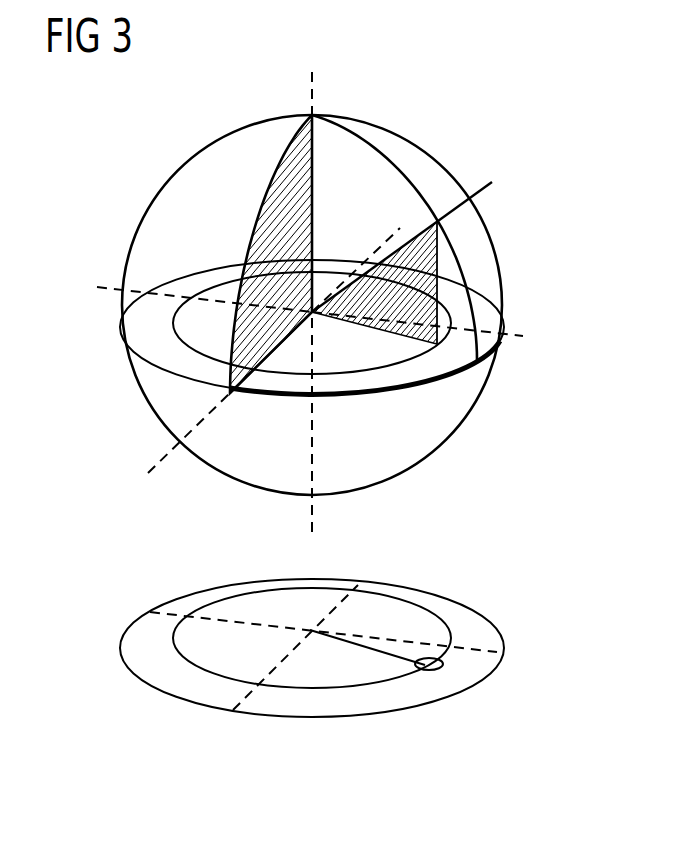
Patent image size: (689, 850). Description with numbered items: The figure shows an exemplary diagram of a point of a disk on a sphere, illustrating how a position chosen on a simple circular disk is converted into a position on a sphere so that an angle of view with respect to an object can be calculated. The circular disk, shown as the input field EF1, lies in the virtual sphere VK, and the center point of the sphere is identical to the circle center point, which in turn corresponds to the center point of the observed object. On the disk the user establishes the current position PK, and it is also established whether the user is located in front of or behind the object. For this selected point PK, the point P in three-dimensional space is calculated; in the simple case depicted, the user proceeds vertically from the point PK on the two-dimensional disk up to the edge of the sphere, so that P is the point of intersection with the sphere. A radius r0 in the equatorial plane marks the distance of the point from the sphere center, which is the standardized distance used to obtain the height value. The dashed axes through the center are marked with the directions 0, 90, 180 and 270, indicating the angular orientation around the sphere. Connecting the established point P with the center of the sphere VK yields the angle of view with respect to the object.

The virtual sphere VK is at (197, 148).
The point P(r;j;q) in three-dimensional space P is at (446, 249).
The projected radius r0 is at (374, 316).
The 0° axis direction 0 is at (211, 414).
The 90° axis direction 90 is at (441, 336).
The 180° axis direction 180 is at (366, 257).
The 270° axis direction 270 is at (177, 289).
The input field EF1 is at (482, 618).
The current position PK is at (433, 670).